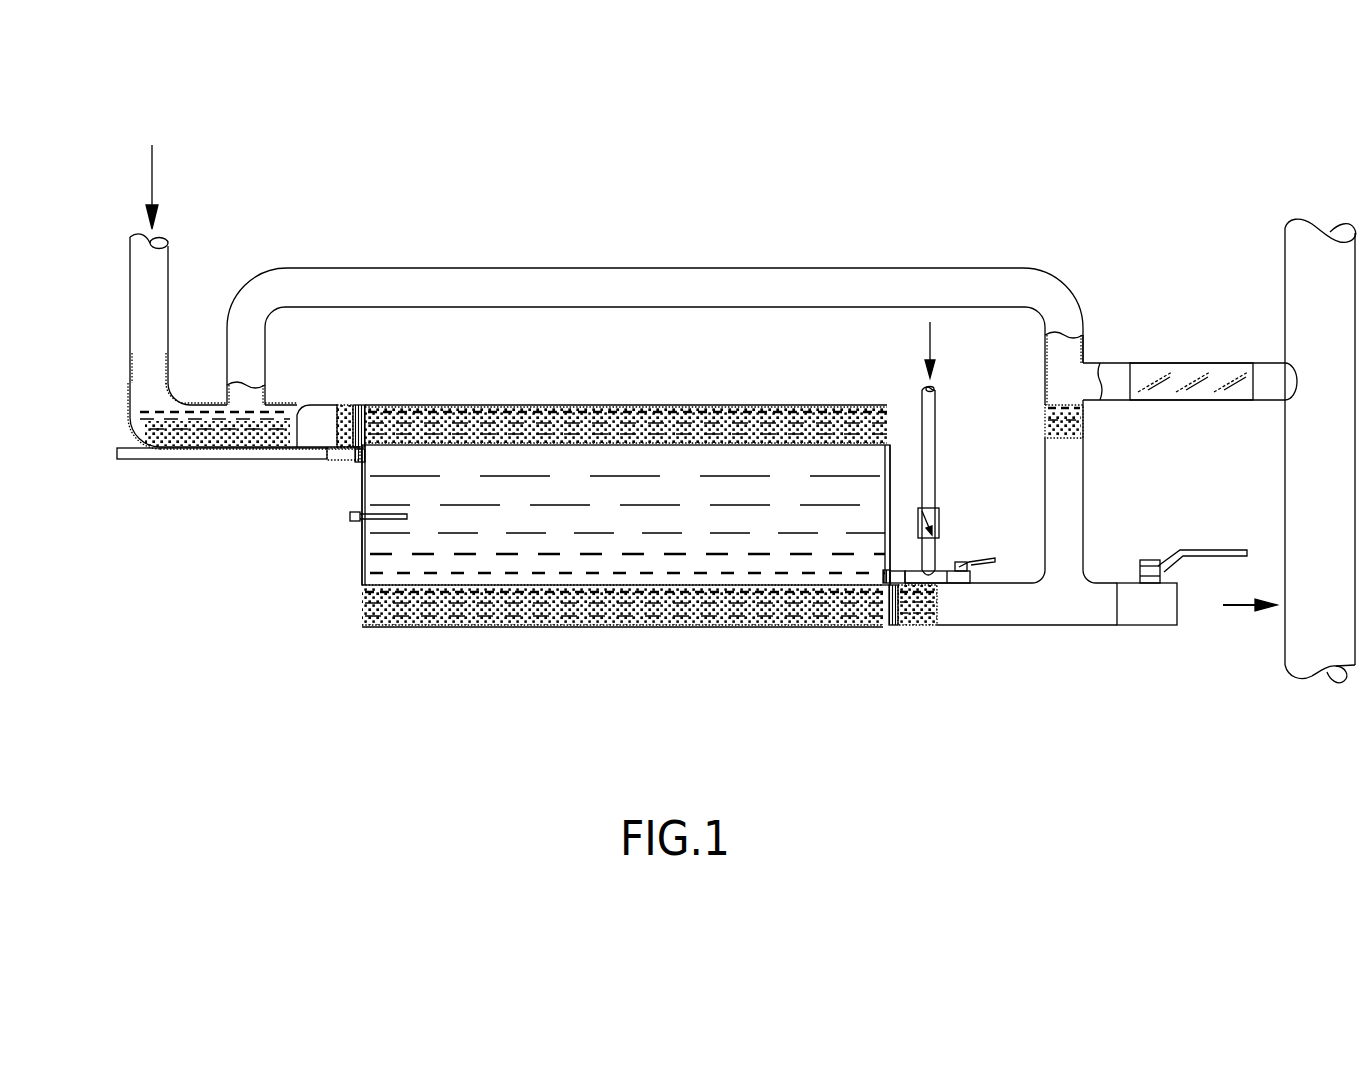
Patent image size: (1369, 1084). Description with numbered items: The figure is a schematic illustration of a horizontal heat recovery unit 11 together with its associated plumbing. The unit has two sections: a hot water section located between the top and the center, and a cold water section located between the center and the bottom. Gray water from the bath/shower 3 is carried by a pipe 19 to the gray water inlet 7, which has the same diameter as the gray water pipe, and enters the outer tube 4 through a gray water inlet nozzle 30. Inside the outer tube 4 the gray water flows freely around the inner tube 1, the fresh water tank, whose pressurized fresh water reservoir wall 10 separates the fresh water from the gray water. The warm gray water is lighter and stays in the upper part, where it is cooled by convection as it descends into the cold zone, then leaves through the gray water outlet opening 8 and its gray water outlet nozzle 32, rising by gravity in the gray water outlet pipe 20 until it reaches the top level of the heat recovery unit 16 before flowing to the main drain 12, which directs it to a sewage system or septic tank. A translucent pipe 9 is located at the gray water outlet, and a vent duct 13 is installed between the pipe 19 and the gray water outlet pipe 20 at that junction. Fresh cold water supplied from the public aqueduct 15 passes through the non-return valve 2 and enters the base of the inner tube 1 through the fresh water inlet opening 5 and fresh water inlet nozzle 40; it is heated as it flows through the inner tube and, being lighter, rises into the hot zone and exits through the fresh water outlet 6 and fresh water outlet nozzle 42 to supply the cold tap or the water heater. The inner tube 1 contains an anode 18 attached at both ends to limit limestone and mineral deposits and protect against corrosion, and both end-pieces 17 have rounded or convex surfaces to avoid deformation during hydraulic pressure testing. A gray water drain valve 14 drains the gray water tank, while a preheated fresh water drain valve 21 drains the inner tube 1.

The inner tube 1 is at (460, 522).
The non-return valve 2 is at (938, 520).
The bath/shower 3 is at (148, 272).
The outer tube 4 is at (685, 420).
The fresh water inlet opening 5 is at (935, 579).
The fresh water outlet 6 is at (222, 452).
The gray water inlet 7 is at (308, 418).
The gray water outlet opening 8 is at (912, 605).
The translucent pipe 9 is at (1187, 366).
The pressurized fresh water reservoir wall 10 is at (455, 440).
The heat recovery unit 11 is at (568, 405).
The main drain 12 is at (1305, 268).
The vent duct 13 is at (380, 285).
The gray water drain valve 14 is at (1145, 610).
The public aqueduct 15 is at (930, 405).
The top level of the heat recovery unit 16 is at (248, 410).
The end-pieces 17 is at (340, 581).
The anode 18 is at (350, 518).
The pipe 19 is at (135, 422).
The gray water outlet pipe 20 is at (1073, 465).
The preheated fresh water drain valve 21 is at (960, 578).
The gray water inlet nozzle 30 is at (357, 404).
The gray water outlet nozzle 32 is at (890, 630).
The fresh water inlet nozzle 40 is at (891, 571).
The fresh water outlet nozzle 42 is at (356, 462).